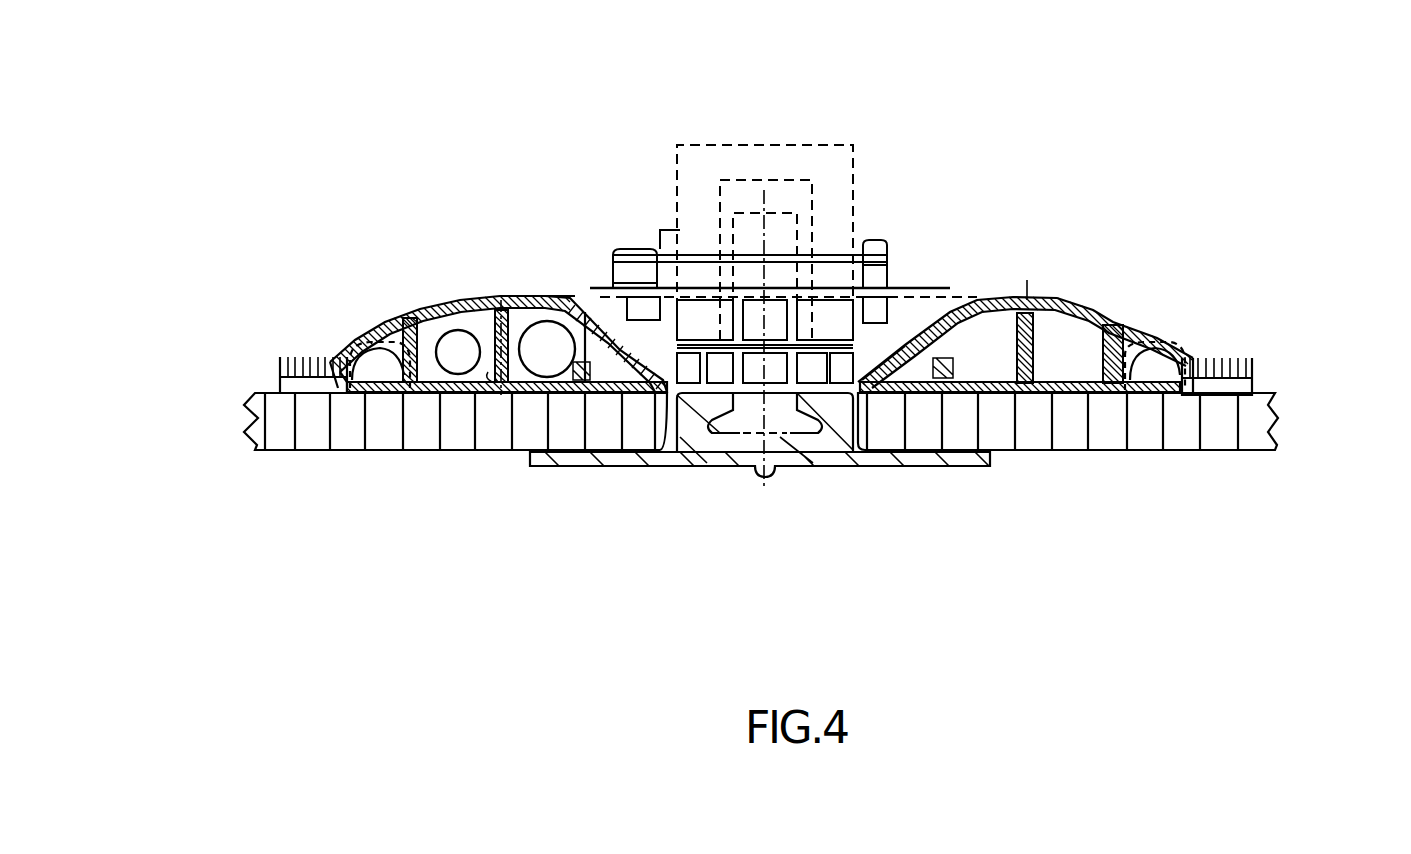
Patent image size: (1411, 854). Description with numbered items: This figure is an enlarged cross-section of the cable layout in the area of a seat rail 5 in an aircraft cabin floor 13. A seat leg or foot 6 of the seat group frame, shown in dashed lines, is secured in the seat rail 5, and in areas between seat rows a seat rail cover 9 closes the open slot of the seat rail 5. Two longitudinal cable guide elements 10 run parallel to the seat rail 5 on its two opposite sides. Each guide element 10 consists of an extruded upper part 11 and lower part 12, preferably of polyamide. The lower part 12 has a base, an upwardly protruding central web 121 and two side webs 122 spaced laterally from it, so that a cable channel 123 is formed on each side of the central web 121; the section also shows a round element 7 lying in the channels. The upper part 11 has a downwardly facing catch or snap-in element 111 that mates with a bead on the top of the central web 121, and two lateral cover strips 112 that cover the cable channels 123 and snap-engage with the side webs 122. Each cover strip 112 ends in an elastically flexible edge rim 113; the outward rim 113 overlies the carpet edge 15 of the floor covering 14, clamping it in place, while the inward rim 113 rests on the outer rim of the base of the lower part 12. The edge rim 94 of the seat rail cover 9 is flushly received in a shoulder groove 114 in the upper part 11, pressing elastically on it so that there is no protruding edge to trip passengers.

The seat rail 5 is at (730, 455).
The seat leg or foot 6 is at (781, 165).
The tube 7 is at (456, 350).
The seat rail cover 9 is at (592, 295).
The longitudinal cable guide element 10 is at (326, 186).
The upper part 11 is at (452, 310).
The lower part 12 is at (455, 393).
The cabin floor 13 is at (278, 443).
The floor covering 14 is at (283, 370).
The carpet edge 15 is at (372, 372).
The edge rim 94 is at (540, 297).
The catch or snap-in element 111 is at (1008, 393).
The lateral cover strip 112 is at (410, 312).
The edge portion or rim 113 is at (345, 348).
The recess step or shoulder groove 114 is at (500, 272).
The central web 121 is at (500, 405).
The side web 122 is at (418, 388).
The cable channel 123 is at (495, 395).